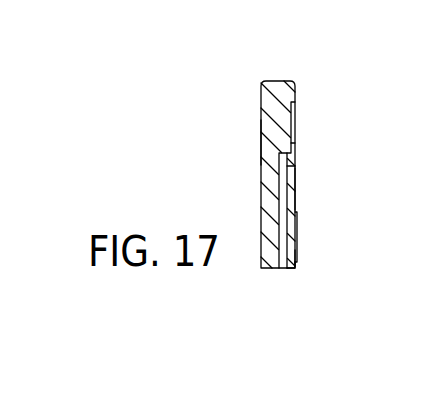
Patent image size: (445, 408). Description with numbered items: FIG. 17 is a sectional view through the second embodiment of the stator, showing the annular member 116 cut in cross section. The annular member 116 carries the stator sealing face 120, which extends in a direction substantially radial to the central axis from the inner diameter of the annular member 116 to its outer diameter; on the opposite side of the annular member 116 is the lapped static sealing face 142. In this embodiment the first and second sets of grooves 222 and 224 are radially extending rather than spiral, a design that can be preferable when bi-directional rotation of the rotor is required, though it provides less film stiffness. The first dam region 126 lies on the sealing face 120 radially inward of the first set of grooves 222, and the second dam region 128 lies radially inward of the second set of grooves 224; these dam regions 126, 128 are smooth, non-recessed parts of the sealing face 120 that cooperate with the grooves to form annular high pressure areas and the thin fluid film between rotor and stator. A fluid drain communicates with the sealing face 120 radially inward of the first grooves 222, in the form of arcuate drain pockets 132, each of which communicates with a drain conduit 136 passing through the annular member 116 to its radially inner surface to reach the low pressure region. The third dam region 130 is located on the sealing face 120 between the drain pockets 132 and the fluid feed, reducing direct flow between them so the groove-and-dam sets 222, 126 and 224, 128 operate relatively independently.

The annular member 116 is at (275, 80).
The first set of grooves 222 is at (294, 118).
The lapped static sealing face 142 is at (261, 142).
The first dam region 126 is at (295, 149).
The arcuate drain pocket 132 is at (295, 164).
The third dam region 130 is at (295, 188).
The second set of grooves 224 is at (296, 237).
The second dam region 128 is at (296, 258).
The sealing face 120 is at (296, 266).
The drain conduit 136 is at (280, 268).